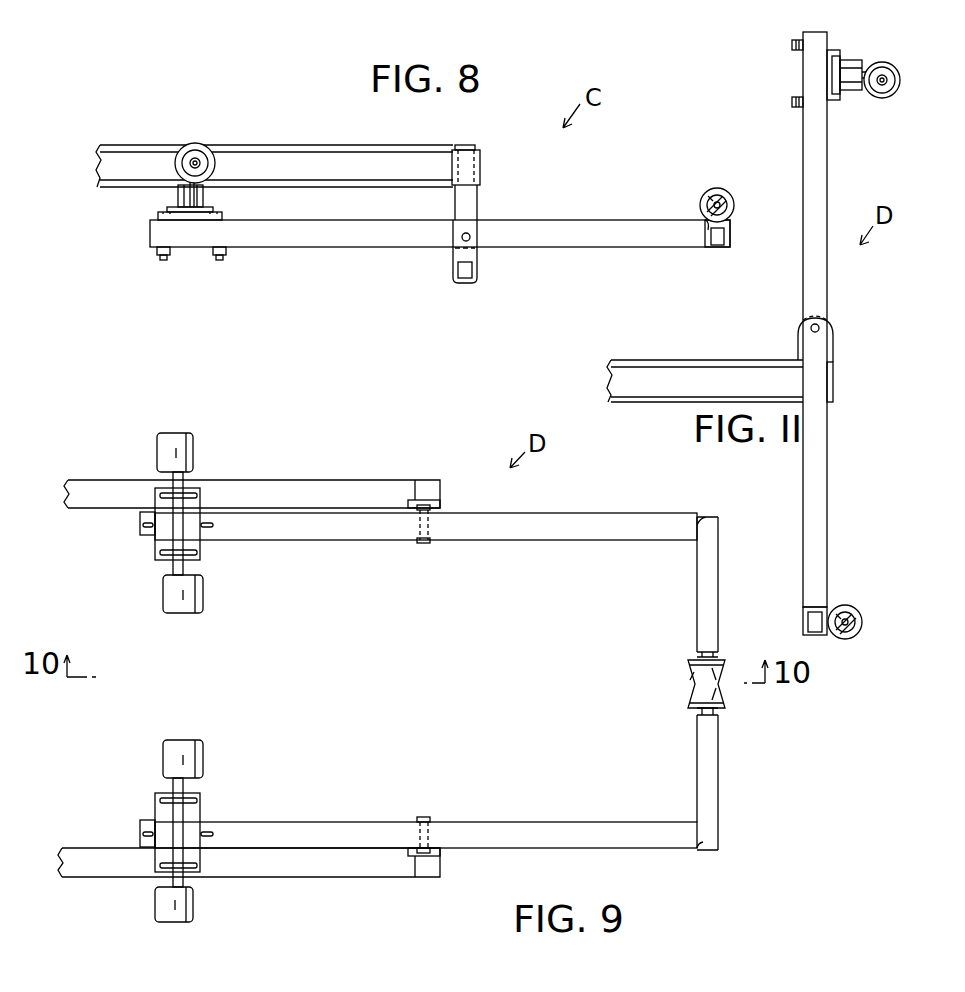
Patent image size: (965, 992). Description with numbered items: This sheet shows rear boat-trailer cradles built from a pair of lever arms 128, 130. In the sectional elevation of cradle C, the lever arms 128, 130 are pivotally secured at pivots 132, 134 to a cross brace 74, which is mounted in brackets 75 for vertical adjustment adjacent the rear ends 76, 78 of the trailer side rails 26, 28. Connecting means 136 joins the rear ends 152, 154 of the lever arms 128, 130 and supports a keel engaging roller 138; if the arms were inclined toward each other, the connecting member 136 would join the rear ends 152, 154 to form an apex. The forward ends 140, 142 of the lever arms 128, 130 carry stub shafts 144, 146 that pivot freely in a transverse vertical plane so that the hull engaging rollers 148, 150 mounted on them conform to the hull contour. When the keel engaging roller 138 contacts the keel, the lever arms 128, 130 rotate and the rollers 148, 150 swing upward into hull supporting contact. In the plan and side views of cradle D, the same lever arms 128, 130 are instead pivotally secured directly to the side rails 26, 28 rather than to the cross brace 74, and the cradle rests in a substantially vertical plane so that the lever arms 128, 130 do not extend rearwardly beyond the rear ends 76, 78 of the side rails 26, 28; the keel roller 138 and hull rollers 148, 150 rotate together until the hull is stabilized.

In FIG. 8, the side rail 26 is at (366, 150).
In FIG. 9, the side rail 26 is at (347, 480).
In FIG. 11, the side rail 26 is at (659, 392).
In FIG. 9, the side rail 28 is at (333, 880).
In FIG. 8, the cross brace 74 is at (465, 283).
In FIG. 8, the brackets 75 is at (480, 170).
In FIG. 8, the rear end of side rail 76 is at (440, 148).
In FIG. 9, the rear end of side rail 76 is at (422, 480).
In FIG. 11, the rear end of side rail 76 is at (833, 392).
In FIG. 9, the rear end of side rail 78 is at (430, 878).
In FIG. 8, the lever arm 128 is at (585, 240).
In FIG. 9, the lever arm 128 is at (558, 540).
In FIG. 11, the lever arm 128 is at (827, 505).
In FIG. 9, the lever arm 130 is at (553, 840).
In FIG. 8, the pivot 132 is at (470, 240).
In FIG. 9, the pivot 132 is at (424, 545).
In FIG. 11, the pivot 132 is at (820, 328).
In FIG. 9, the pivot 134 is at (425, 815).
In FIG. 8, the connecting means 136 is at (720, 250).
In FIG. 9, the connecting means 136 is at (718, 772).
In FIG. 11, the connecting means 136 is at (806, 615).
In FIG. 8, the keel engaging roller 138 is at (718, 188).
In FIG. 9, the keel engaging roller 138 is at (725, 702).
In FIG. 11, the keel engaging roller 138 is at (853, 636).
In FIG. 8, the forward end of lever arm 140 is at (150, 234).
In FIG. 9, the forward end of lever arm 140 is at (140, 535).
In FIG. 9, the forward end of lever arm 142 is at (140, 823).
In FIG. 8, the stub shaft 144 is at (210, 163).
In FIG. 9, the stub shaft 144 is at (185, 567).
In FIG. 11, the stub shaft 144 is at (812, 34).
In FIG. 9, the stub shaft 146 is at (186, 784).
In FIG. 8, the hull engaging roller 148 is at (195, 144).
In FIG. 9, the hull engaging roller 148 is at (193, 452).
In FIG. 11, the hull engaging roller 148 is at (882, 62).
In FIG. 9, the hull engaging roller 150 is at (203, 758).
In FIG. 8, the rear end of lever arm 152 is at (708, 248).
In FIG. 9, the rear end of lever arm 152 is at (706, 524).
In FIG. 9, the rear end of lever arm 154 is at (700, 852).